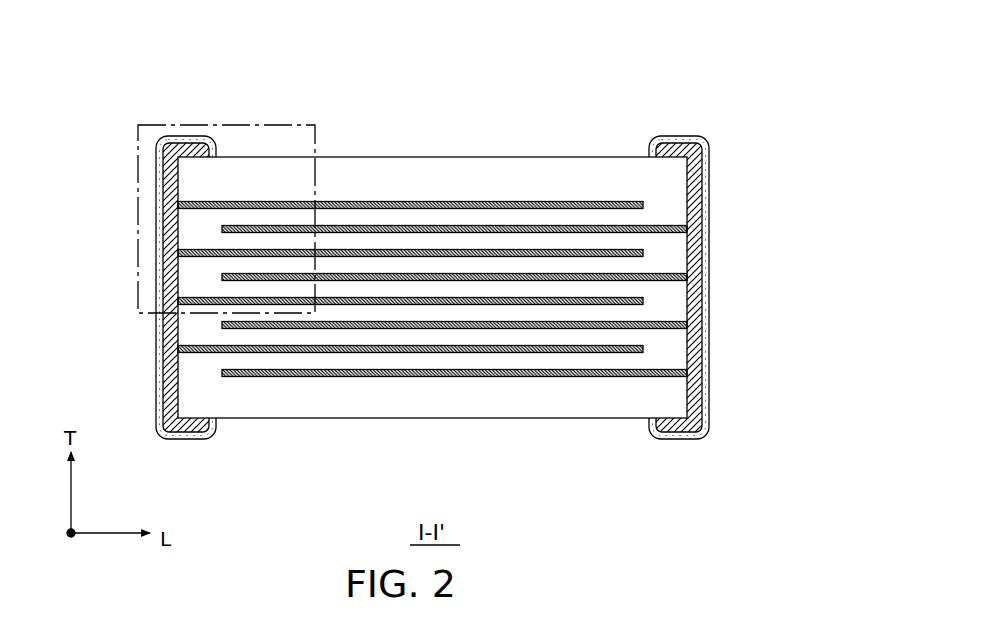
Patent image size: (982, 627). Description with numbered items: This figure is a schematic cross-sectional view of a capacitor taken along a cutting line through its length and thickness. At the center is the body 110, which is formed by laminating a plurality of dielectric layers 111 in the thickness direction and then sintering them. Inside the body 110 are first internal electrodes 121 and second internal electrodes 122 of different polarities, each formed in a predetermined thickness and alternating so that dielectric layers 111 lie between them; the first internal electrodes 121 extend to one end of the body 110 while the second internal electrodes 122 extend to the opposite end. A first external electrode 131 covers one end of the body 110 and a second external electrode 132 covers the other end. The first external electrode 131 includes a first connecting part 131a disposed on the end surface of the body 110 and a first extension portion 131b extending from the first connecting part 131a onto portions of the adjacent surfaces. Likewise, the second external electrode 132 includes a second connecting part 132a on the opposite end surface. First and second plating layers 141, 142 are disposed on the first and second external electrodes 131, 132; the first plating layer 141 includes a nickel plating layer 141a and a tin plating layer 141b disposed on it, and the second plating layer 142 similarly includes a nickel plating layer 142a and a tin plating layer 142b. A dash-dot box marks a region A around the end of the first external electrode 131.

The body 110 is at (432, 157).
The dielectric layer 111 is at (672, 262).
The first internal electrode 121 is at (683, 247).
The second internal electrode 122 is at (660, 278).
The first external electrode 131 is at (153, 286).
The first connecting part 131a is at (170, 211).
The first extension portion 131b is at (188, 141).
The second external electrode 132 is at (724, 285).
The second connecting part 132a is at (695, 207).
The first plating layer 141 is at (120, 287).
The nickel plating layer 141a is at (170, 399).
The tin plating layer 141b is at (160, 346).
The second plating layer 142 is at (751, 287).
The nickel plating layer 142a is at (690, 396).
The tin plating layer 142b is at (712, 342).
The enlarged region A is at (284, 124).